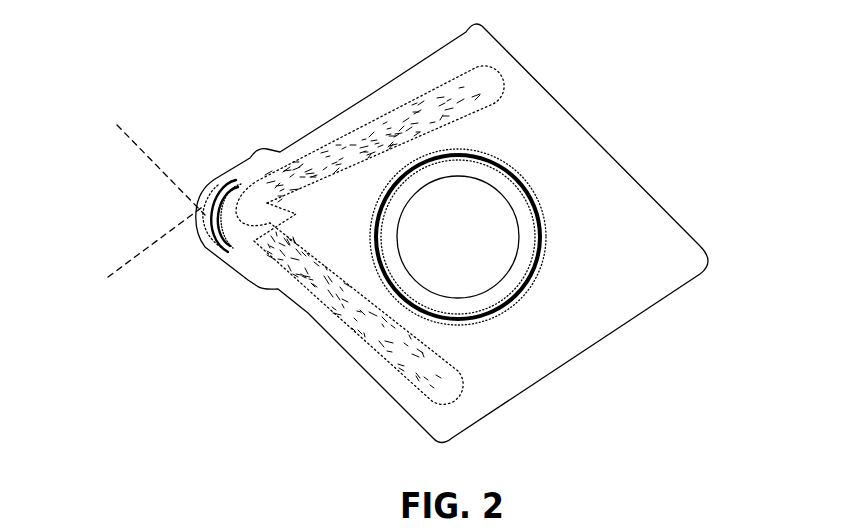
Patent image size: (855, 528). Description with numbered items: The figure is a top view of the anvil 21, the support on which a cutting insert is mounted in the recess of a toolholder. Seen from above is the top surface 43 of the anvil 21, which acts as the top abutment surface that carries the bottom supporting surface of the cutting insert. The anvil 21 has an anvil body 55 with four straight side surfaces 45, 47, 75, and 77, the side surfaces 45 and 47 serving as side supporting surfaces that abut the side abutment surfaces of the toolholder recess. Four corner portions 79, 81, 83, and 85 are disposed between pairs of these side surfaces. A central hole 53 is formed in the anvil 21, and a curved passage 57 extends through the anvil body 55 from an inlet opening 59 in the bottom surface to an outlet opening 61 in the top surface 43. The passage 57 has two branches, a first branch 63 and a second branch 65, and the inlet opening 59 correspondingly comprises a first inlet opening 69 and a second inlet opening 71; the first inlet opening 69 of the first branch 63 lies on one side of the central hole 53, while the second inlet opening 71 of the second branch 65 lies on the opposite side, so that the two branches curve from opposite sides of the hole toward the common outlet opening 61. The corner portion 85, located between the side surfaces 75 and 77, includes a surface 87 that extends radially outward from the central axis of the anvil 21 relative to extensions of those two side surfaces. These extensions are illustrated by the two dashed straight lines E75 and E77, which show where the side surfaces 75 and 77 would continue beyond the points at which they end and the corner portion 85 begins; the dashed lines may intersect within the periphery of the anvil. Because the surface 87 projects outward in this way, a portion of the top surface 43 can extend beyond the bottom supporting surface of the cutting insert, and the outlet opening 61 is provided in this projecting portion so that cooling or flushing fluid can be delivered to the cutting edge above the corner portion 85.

The anvil 21 is at (196, 122).
The top surface 43 is at (667, 250).
The side surface 45 is at (625, 165).
The side surface 47 is at (613, 330).
The central hole 53 is at (466, 249).
The anvil body 55 is at (648, 221).
The curved passage 57 is at (294, 274).
The inlet opening 59 is at (453, 63).
The outlet opening 61 is at (195, 220).
The first branch 63 is at (352, 110).
The second branch 65 is at (362, 353).
The first inlet opening 69 is at (444, 98).
The second inlet opening 71 is at (418, 383).
The side surface 75 is at (317, 132).
The side surface 77 is at (322, 333).
The corner portion 79 is at (705, 260).
The corner portion 81 is at (473, 26).
The corner portion 83 is at (441, 444).
The corner portion 85 is at (216, 274).
The surface 87 is at (208, 248).
The dashed straight line E75 is at (133, 257).
The dashed straight line E77 is at (140, 151).